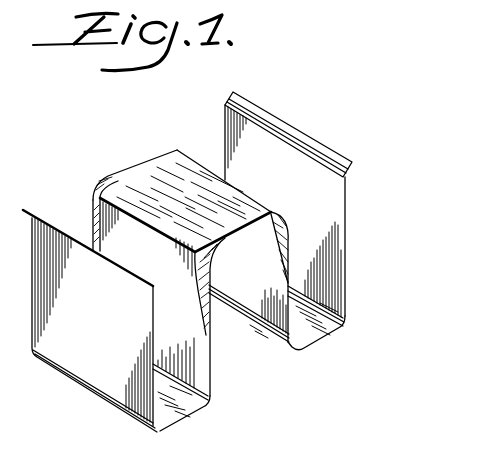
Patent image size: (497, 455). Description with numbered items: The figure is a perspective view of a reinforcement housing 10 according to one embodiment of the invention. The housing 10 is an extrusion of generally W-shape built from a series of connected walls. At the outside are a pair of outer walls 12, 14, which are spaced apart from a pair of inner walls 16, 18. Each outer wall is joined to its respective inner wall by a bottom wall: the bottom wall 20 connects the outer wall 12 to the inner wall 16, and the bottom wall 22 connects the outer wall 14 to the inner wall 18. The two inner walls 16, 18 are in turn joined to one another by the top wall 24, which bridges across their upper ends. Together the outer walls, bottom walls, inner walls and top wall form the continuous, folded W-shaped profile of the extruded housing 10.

The housing 10 is at (346, 133).
The outer wall 12 is at (100, 355).
The outer wall 14 is at (347, 258).
The inner wall 16 is at (211, 378).
The inner wall 18 is at (273, 333).
The bottom wall 20 is at (178, 418).
The bottom wall 22 is at (320, 338).
The top wall 24 is at (160, 185).